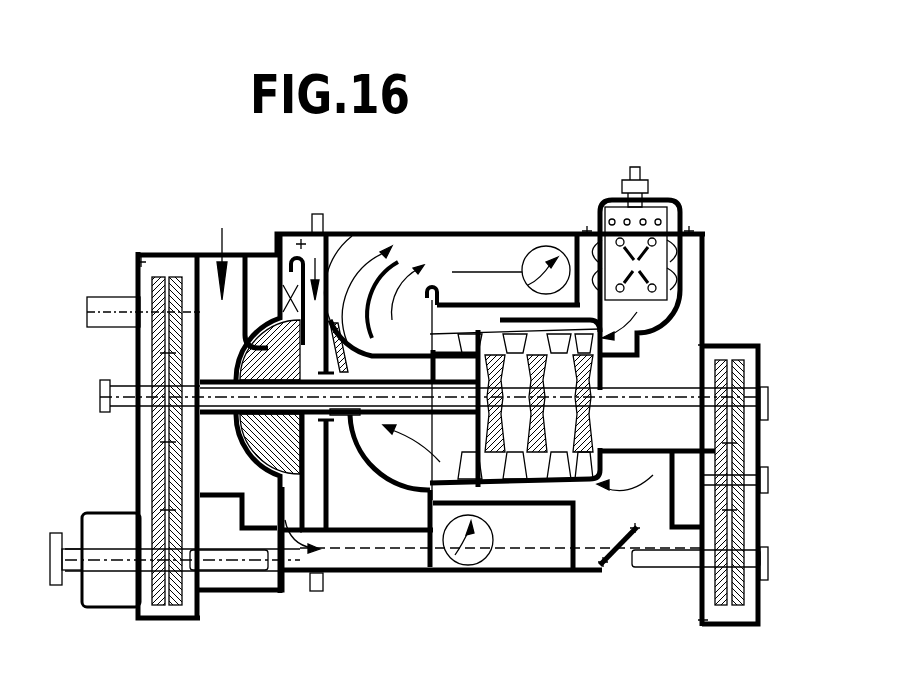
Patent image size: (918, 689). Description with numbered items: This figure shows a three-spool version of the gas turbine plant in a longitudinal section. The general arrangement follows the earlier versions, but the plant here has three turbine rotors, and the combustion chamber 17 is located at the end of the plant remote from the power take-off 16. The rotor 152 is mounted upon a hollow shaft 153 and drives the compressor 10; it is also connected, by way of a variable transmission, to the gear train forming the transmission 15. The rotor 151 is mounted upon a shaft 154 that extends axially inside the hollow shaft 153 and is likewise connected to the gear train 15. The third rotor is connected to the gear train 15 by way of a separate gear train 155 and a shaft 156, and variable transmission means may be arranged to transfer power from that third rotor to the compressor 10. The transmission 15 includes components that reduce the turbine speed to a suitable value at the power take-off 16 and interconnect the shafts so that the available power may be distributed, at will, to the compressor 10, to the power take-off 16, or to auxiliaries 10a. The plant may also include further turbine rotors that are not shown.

The compressor 10 is at (270, 426).
The auxiliaries 10a is at (102, 392).
The transmission 15 is at (155, 428).
The power take-off 16 is at (80, 540).
The combustion chamber 17 is at (652, 212).
The rotor 151 is at (535, 480).
The rotor 152 is at (494, 338).
The hollow shaft 153 is at (398, 400).
The shaft 154 is at (343, 400).
The gear train 155 is at (728, 472).
The shaft 156 is at (232, 570).